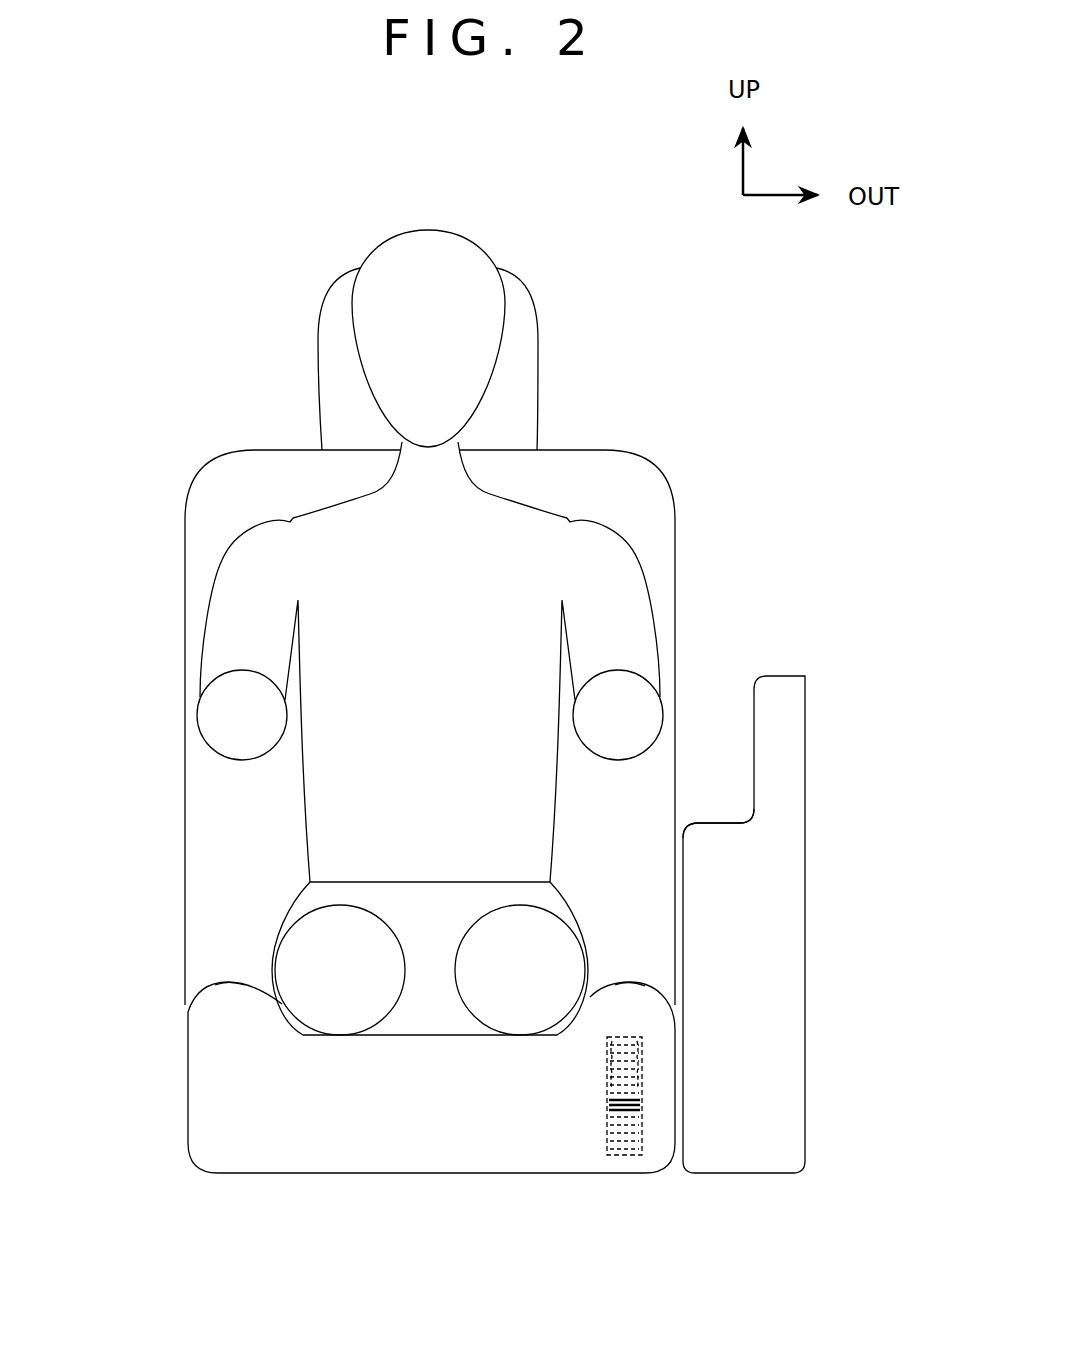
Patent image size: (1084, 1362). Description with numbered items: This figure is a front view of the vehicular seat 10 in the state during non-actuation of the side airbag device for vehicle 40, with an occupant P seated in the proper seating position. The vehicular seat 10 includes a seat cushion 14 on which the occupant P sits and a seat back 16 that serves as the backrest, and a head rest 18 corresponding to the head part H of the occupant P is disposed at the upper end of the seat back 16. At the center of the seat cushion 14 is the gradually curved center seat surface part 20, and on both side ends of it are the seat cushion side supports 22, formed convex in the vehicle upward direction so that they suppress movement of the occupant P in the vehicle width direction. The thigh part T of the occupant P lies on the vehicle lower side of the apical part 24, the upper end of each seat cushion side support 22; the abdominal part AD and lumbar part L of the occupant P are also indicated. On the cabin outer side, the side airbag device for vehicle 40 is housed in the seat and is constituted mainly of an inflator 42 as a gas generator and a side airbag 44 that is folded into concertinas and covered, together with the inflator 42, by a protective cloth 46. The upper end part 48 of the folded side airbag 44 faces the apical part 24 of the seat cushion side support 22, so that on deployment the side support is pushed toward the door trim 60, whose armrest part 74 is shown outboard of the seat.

The vehicular seat 10 is at (668, 484).
The seat cushion 14 is at (198, 1065).
The seat back 16 is at (667, 568).
The head rest 18 is at (513, 318).
The center seat surface part 20 is at (435, 1033).
The seat cushion side support 22 is at (202, 1013).
The apical part 24 is at (217, 997).
The side airbag device for vehicle 40 is at (629, 1100).
The inflator 42 is at (607, 1150).
The side airbag 44 is at (607, 1100).
The protective cloth 46 is at (642, 1120).
The upper end part 48 is at (618, 1035).
The door trim 60 is at (788, 895).
The armrest part 74 is at (718, 822).
The head part H is at (398, 253).
The occupant P is at (430, 664).
The abdominal part AD is at (433, 838).
The lumbar part L is at (547, 897).
The thigh part T is at (270, 975).